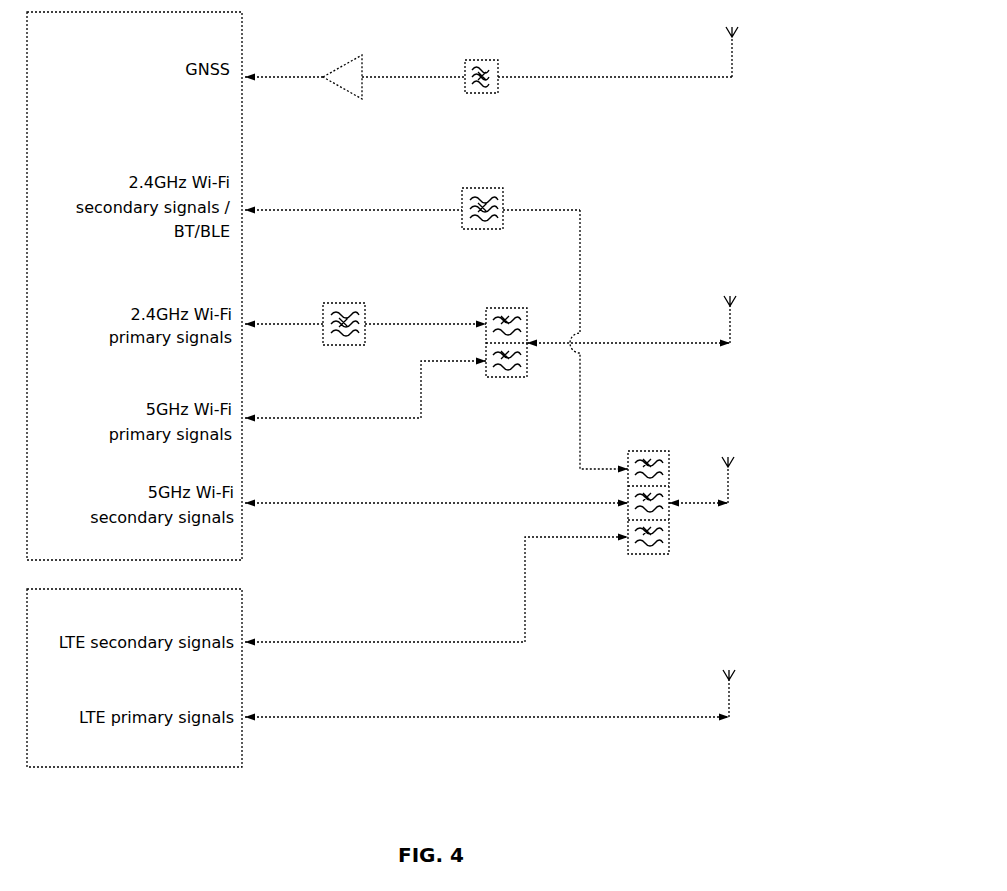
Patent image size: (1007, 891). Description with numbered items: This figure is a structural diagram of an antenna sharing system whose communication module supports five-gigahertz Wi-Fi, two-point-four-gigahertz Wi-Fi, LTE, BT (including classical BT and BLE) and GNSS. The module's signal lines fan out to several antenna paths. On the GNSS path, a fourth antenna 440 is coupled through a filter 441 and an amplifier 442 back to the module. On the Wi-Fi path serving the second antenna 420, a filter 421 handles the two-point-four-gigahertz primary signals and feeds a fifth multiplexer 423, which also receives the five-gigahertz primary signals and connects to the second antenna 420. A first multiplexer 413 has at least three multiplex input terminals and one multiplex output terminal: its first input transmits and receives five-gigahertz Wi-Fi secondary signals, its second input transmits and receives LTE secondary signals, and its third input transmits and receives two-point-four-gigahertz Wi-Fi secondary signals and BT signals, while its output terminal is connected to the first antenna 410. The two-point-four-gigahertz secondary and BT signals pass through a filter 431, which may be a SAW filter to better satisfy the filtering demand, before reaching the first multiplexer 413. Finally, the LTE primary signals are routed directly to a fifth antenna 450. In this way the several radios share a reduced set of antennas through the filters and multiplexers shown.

The first antenna 410 is at (731, 480).
The first multiplexer 413 is at (647, 450).
The second antenna 420 is at (733, 322).
The filter 421 is at (345, 303).
The fifth multiplexer 423 is at (510, 307).
The filter 431 is at (487, 187).
The fourth antenna 440 is at (734, 55).
The filter 441 is at (482, 58).
The amplifier 442 is at (340, 55).
The fifth antenna 450 is at (732, 703).